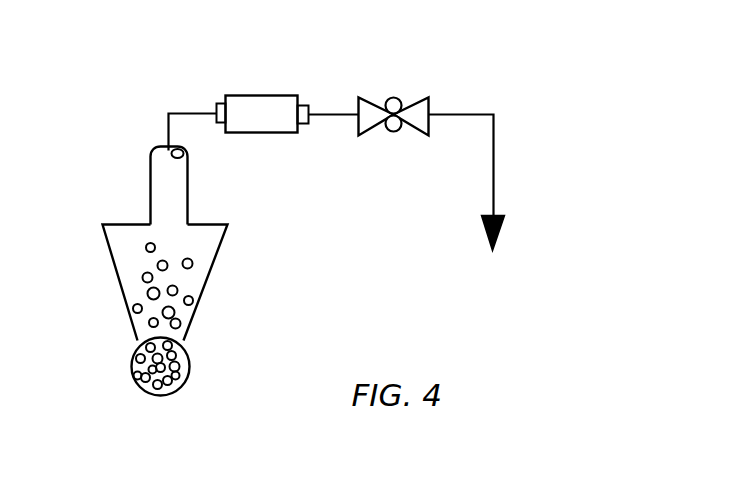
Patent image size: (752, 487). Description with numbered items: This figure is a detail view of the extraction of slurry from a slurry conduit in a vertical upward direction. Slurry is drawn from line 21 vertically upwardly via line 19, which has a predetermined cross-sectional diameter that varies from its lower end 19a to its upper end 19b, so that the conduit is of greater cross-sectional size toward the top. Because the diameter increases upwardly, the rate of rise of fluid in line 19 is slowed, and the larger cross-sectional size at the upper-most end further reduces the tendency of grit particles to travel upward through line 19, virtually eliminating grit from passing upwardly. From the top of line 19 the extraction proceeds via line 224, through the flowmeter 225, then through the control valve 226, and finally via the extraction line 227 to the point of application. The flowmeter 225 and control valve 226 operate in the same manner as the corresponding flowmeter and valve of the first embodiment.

The line 19 is at (187, 200).
The lower end 19a is at (192, 328).
The upper end 19b is at (220, 255).
The line 21 is at (132, 360).
The line 224 is at (214, 110).
The flowmeter 225 is at (257, 95).
The control valve 226 is at (406, 99).
The extraction line 227 is at (494, 170).